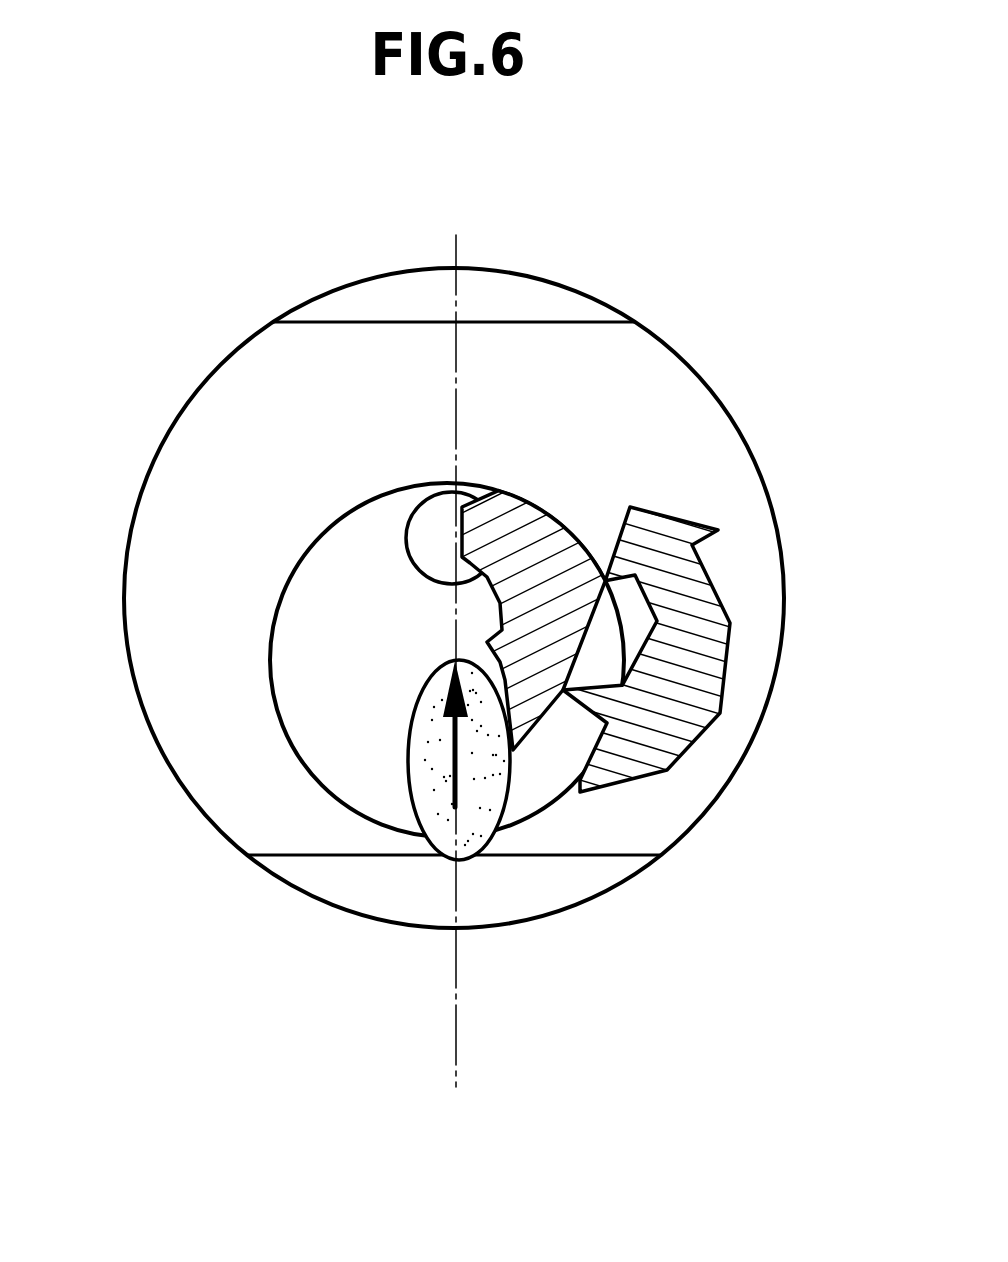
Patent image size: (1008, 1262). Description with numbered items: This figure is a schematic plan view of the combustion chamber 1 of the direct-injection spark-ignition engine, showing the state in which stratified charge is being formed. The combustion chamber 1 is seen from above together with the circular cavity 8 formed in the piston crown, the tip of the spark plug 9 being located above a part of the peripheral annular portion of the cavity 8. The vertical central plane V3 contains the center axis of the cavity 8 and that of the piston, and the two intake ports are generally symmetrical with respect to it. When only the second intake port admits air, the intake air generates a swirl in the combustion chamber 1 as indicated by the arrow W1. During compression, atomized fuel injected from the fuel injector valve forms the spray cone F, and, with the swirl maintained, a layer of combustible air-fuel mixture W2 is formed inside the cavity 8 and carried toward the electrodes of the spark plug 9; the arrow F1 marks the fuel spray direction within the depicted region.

The combustion chamber 1 is at (677, 377).
The cavity 8 is at (290, 693).
The spark plug 9 is at (422, 507).
The arrow indicating swirl gas flow W1 is at (720, 637).
The layer of combustible air-fuel mixture W2 is at (530, 530).
The spray cone F is at (497, 852).
The flow direction arrow F1 is at (463, 775).
The vertical central plane V3 is at (457, 1043).